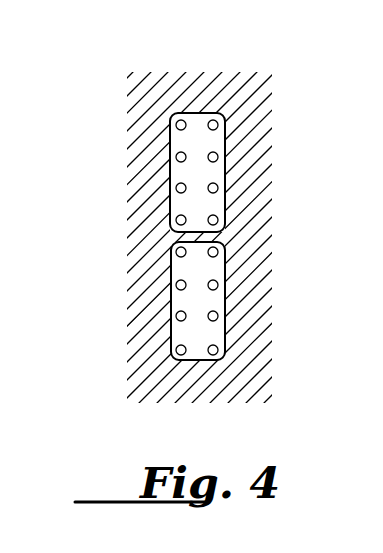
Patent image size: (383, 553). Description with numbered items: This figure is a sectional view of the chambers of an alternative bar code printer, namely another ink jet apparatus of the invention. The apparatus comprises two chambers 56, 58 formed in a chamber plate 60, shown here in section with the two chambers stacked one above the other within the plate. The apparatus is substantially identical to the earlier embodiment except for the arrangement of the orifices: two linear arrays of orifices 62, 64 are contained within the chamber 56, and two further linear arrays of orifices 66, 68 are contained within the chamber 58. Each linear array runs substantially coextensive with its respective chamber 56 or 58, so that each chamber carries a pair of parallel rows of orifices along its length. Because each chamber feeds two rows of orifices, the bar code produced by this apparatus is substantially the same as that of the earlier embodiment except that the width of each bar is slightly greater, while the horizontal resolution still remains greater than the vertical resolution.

The chamber 56 is at (192, 113).
The chamber 58 is at (203, 362).
The chamber plate 60 is at (244, 356).
The linear array of orifices 62 is at (176, 220).
The linear array of orifices 64 is at (218, 220).
The linear array of orifices 66 is at (176, 350).
The linear array of orifices 68 is at (218, 350).